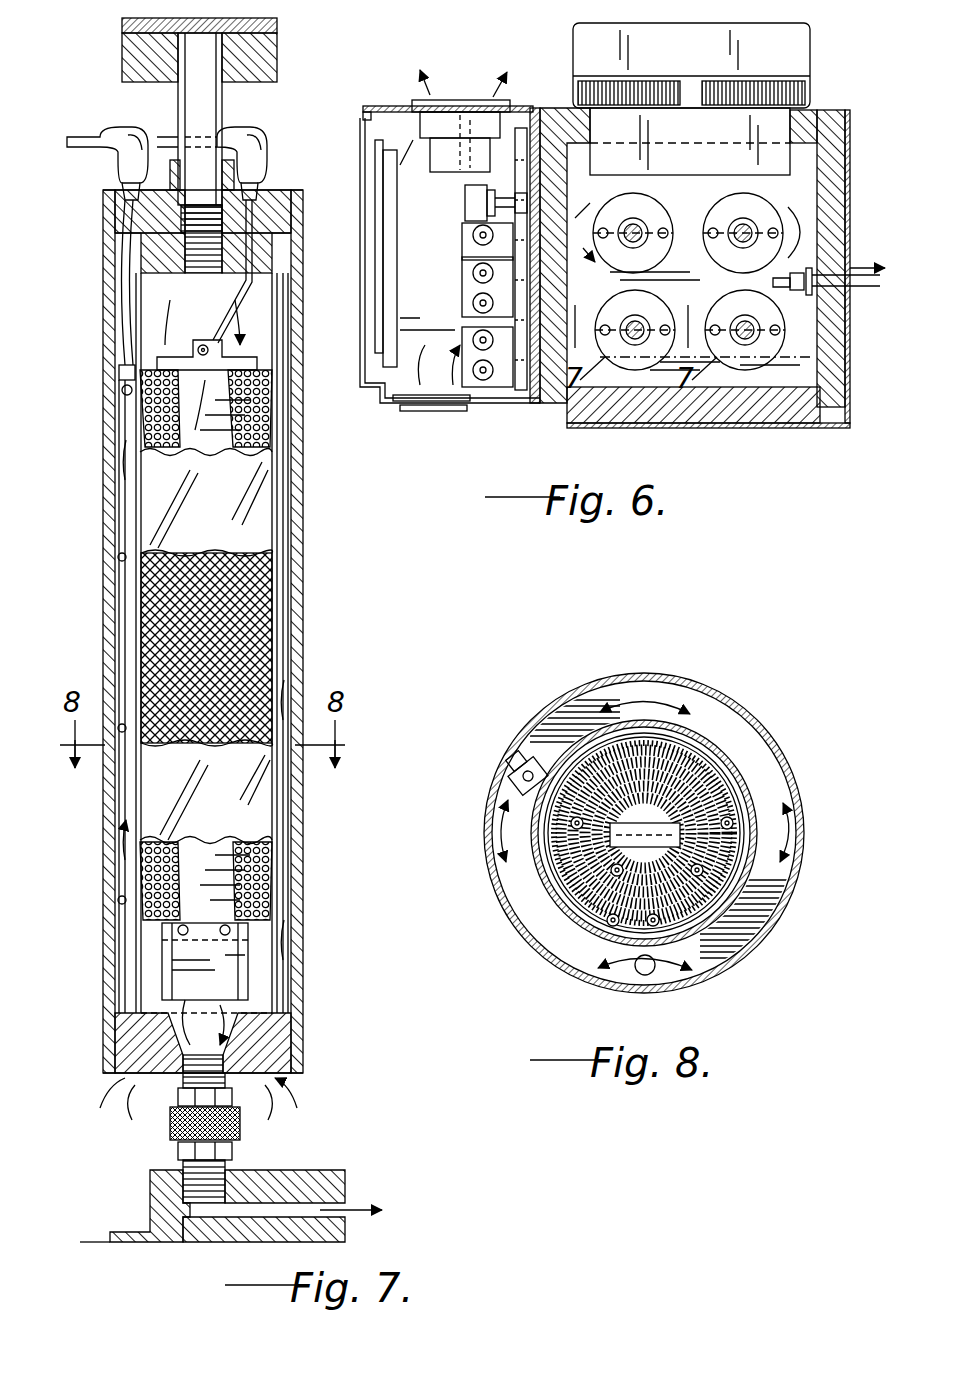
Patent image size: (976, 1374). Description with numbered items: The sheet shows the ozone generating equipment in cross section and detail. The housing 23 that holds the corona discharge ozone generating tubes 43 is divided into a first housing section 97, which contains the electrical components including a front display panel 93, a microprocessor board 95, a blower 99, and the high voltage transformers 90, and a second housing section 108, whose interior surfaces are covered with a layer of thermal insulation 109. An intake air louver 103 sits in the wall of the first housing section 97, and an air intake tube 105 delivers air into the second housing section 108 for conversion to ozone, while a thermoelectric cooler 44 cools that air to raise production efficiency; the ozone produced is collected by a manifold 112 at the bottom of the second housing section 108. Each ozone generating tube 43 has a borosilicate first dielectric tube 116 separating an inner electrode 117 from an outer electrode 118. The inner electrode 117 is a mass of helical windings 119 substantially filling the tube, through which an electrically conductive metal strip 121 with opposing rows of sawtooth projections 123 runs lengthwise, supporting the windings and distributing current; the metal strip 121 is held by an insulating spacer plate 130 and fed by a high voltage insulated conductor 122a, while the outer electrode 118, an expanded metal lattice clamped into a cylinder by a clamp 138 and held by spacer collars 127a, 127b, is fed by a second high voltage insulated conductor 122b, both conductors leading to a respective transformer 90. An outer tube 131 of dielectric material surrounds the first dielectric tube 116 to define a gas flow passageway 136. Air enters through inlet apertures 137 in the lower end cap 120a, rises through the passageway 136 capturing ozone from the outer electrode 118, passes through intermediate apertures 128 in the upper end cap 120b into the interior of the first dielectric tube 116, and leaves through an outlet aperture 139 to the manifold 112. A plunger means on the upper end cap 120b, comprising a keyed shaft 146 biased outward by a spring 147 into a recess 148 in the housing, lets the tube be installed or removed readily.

In FIG. 6, the housing 23 is at (847, 104).
In FIG. 7, the ozone generating tube 43 is at (328, 645).
In FIG. 6, the ozone generating tube 43 is at (717, 212).
In FIG. 8, the ozone generating tube 43 is at (705, 665).
In FIG. 6, the thermoelectric cooler 44 is at (588, 48).
In FIG. 6, the high voltage transformer 90 is at (461, 340).
In FIG. 6, the front display panel 93 is at (466, 228).
In FIG. 6, the microprocessor board 95 is at (390, 287).
In FIG. 6, the first housing section 97 is at (393, 103).
In FIG. 6, the blower 99 is at (450, 120).
In FIG. 6, the intake air louver 103 is at (455, 415).
In FIG. 6, the air intake tube 105 is at (464, 200).
In FIG. 7, the second housing section 108 is at (265, 15).
In FIG. 6, the second housing section 108 is at (848, 388).
In FIG. 7, the thermal insulation 109 is at (275, 52).
In FIG. 6, the thermal insulation 109 is at (580, 392).
In FIG. 7, the manifold 112 is at (312, 1170).
In FIG. 6, the manifold 112 is at (796, 222).
In FIG. 7, the first dielectric tube 116 is at (282, 497).
In FIG. 8, the first dielectric tube 116 is at (748, 790).
In FIG. 7, the inner electrode 117 is at (265, 386).
In FIG. 8, the inner electrode 117 is at (718, 730).
In FIG. 7, the outer electrode 118 is at (273, 620).
In FIG. 8, the outer electrode 118 is at (760, 760).
In FIG. 8, the helical windings 119 is at (556, 722).
In FIG. 7, the lower end cap 120a is at (272, 1020).
In FIG. 8, the lower end cap 120a is at (704, 707).
In FIG. 7, the upper end cap 120b is at (258, 192).
In FIG. 7, the metal strip 121 is at (224, 352).
In FIG. 8, the metal strip 121 is at (572, 708).
In FIG. 7, the high voltage insulated conductor 122a is at (170, 137).
In FIG. 7, the high voltage insulated conductor 122b is at (88, 134).
In FIG. 7, the sawtooth projections 123 is at (200, 440).
In FIG. 7, the spacer collar 127a is at (262, 945).
In FIG. 7, the spacer collar 127b is at (279, 294).
In FIG. 7, the intermediate apertures 128 is at (128, 205).
In FIG. 7, the insulating spacer plate 130 is at (240, 963).
In FIG. 7, the outer tube 131 is at (304, 522).
In FIG. 8, the outer tube 131 is at (792, 870).
In FIG. 7, the gas flow passageway 136 is at (300, 562).
In FIG. 8, the gas flow passageway 136 is at (570, 947).
In FIG. 7, the inlet apertures 137 is at (198, 1112).
In FIG. 8, the inlet apertures 137 is at (643, 703).
In FIG. 7, the clamp 138 is at (150, 462).
In FIG. 8, the clamp 138 is at (512, 777).
In FIG. 7, the outlet aperture 139 is at (206, 1012).
In FIG. 7, the keyed shaft 146 is at (222, 112).
In FIG. 7, the spring 147 is at (252, 272).
In FIG. 7, the recess 148 is at (232, 62).